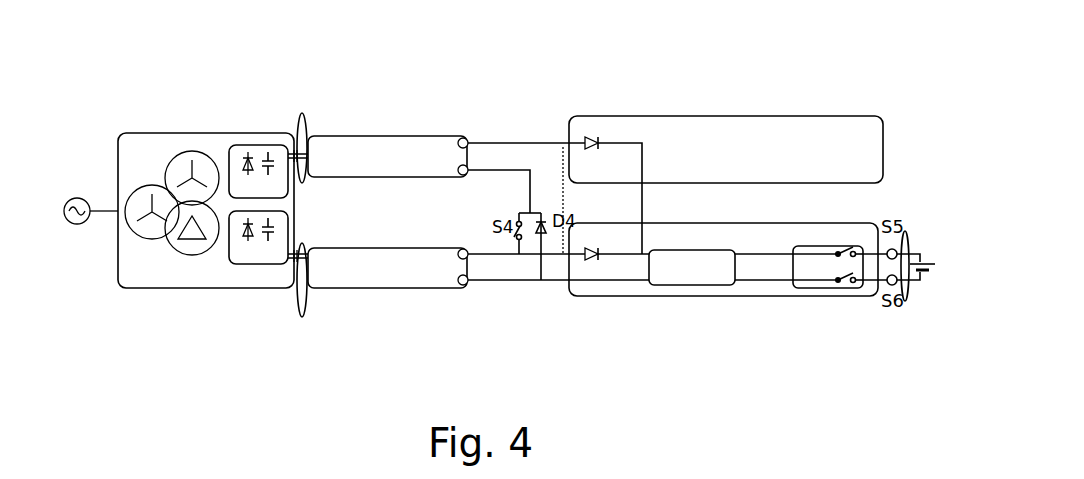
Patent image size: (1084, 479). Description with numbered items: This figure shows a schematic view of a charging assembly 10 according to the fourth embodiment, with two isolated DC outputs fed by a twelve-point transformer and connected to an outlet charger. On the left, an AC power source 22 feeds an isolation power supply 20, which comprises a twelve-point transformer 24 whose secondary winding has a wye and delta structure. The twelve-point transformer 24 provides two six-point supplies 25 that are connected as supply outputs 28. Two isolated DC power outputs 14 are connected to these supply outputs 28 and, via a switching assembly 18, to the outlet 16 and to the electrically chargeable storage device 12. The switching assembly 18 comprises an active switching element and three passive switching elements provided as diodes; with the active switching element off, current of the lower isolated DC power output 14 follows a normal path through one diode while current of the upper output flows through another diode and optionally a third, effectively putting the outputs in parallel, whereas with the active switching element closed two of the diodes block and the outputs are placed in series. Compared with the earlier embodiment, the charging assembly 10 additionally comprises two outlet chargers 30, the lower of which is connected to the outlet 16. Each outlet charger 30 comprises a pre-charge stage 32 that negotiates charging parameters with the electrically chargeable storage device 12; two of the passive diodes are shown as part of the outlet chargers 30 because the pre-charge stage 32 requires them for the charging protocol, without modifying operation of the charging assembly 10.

The charging assembly 10 is at (484, 85).
The electrically chargeable storage device 12 is at (923, 272).
The isolated DC power output 14 is at (368, 136).
The outlet 16 is at (905, 301).
The switching assembly 18 is at (554, 118).
The isolation power supply 20 is at (195, 108).
The AC power source 22 is at (77, 224).
The twelve-point transformer 24 is at (170, 258).
The six-point supply 25 is at (262, 145).
The supply output 28 is at (302, 113).
The outlet charger 30 is at (726, 213).
The pre-charge stage 32 is at (688, 285).